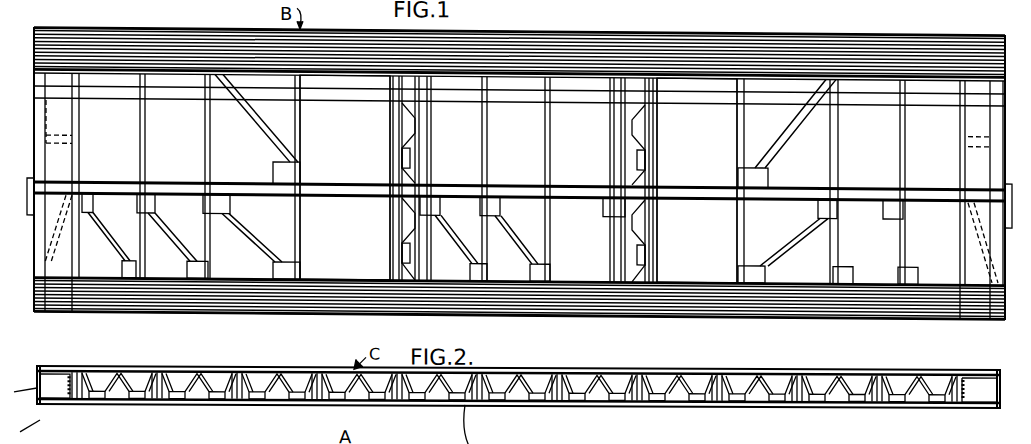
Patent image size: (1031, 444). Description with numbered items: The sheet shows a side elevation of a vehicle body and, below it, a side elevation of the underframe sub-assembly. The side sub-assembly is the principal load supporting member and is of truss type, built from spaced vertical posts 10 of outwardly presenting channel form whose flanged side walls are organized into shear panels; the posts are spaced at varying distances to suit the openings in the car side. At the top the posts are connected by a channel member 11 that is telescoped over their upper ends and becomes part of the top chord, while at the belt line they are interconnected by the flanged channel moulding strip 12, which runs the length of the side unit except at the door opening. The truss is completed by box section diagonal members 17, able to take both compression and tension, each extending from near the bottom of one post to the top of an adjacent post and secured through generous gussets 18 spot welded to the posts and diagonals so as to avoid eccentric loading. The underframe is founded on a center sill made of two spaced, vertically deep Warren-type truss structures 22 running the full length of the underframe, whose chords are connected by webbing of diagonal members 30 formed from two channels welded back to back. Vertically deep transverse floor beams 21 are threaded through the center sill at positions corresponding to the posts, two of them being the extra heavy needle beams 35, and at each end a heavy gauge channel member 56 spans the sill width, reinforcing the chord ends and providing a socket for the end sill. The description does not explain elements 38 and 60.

In FIG. 1, the vertical post 10 is at (205, 160).
In FIG. 2, the vertical post 10 is at (205, 428).
In FIG. 1, the channel member 11 is at (343, 82).
In FIG. 1, the moulding strip 12 is at (262, 195).
In FIG. 1, the diagonal member 17 is at (252, 116).
In FIG. 1, the gusset 18 is at (301, 163).
In FIG. 1, the truss structure 22 is at (513, 197).
In FIG. 2, the truss structure 22 is at (688, 408).
In FIG. 2, the floor beam 21 is at (295, 406).
In FIG. 2, the diagonal member 30 is at (712, 372).
In FIG. 2, the needle beam 35 is at (205, 402).
In FIG. 2, the lower flange 38 is at (20, 432).
In FIG. 2, the channel member 56 is at (45, 372).
In FIG. 2, the side member 60 is at (18, 394).